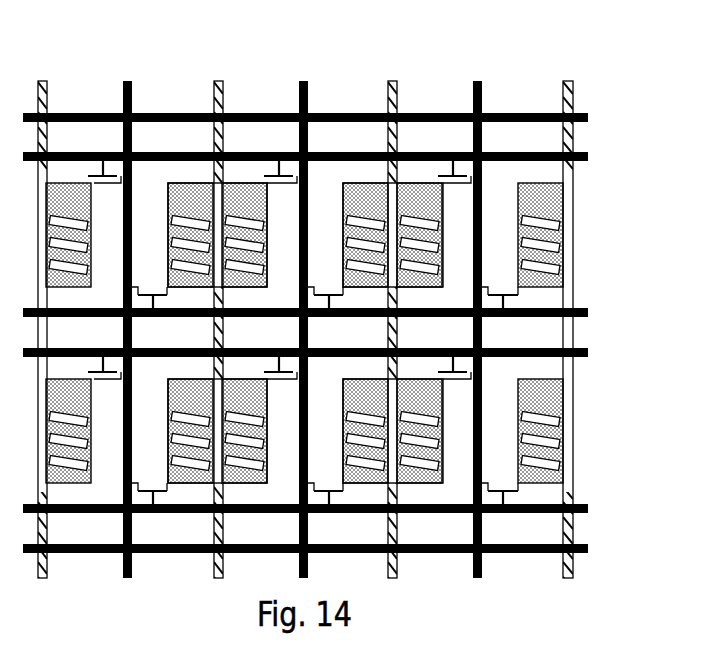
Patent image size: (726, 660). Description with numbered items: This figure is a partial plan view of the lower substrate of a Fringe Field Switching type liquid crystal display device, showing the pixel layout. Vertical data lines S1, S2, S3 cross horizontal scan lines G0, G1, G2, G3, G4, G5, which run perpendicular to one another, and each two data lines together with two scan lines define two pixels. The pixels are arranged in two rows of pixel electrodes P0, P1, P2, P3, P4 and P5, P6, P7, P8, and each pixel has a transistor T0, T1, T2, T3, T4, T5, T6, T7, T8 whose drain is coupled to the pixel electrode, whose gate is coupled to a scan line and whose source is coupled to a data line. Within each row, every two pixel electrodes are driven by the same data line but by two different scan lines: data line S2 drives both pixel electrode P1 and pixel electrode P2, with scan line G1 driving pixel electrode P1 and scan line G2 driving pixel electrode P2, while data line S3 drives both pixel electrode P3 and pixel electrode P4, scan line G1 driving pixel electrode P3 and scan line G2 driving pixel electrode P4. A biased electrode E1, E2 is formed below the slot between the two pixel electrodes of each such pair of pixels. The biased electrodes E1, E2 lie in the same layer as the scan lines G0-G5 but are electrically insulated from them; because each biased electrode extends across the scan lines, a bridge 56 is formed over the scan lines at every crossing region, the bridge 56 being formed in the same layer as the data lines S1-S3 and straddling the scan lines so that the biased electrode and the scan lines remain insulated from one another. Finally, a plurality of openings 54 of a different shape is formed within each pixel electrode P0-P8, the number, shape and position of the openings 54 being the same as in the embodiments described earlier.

The openings 54 is at (304, 333).
The bridge 56 is at (327, 320).
The biased electrode E1 is at (218, 317).
The biased electrode E2 is at (422, 571).
The data line S1 is at (131, 317).
The data line S2 is at (307, 317).
The data line S3 is at (481, 317).
The scan line G0 is at (321, 118).
The scan line G1 is at (321, 158).
The scan line G2 is at (321, 314).
The scan line G3 is at (321, 354).
The scan line G4 is at (321, 510).
The scan line G5 is at (321, 550).
The pixel electrode P0 is at (202, 209).
The pixel electrode P1 is at (257, 209).
The pixel electrode P2 is at (377, 209).
The pixel electrode P3 is at (430, 209).
The pixel electrode P4 is at (553, 209).
The pixel electrode P5 is at (202, 405).
The pixel electrode P6 is at (257, 405).
The pixel electrode P7 is at (377, 405).
The pixel electrode P8 is at (430, 405).
The transistor T0 is at (149, 283).
The transistor T1 is at (280, 189).
The transistor T2 is at (325, 283).
The transistor T3 is at (454, 189).
The transistor T4 is at (500, 284).
The transistor T5 is at (149, 479).
The transistor T6 is at (280, 385).
The transistor T7 is at (325, 479).
The transistor T8 is at (454, 385).